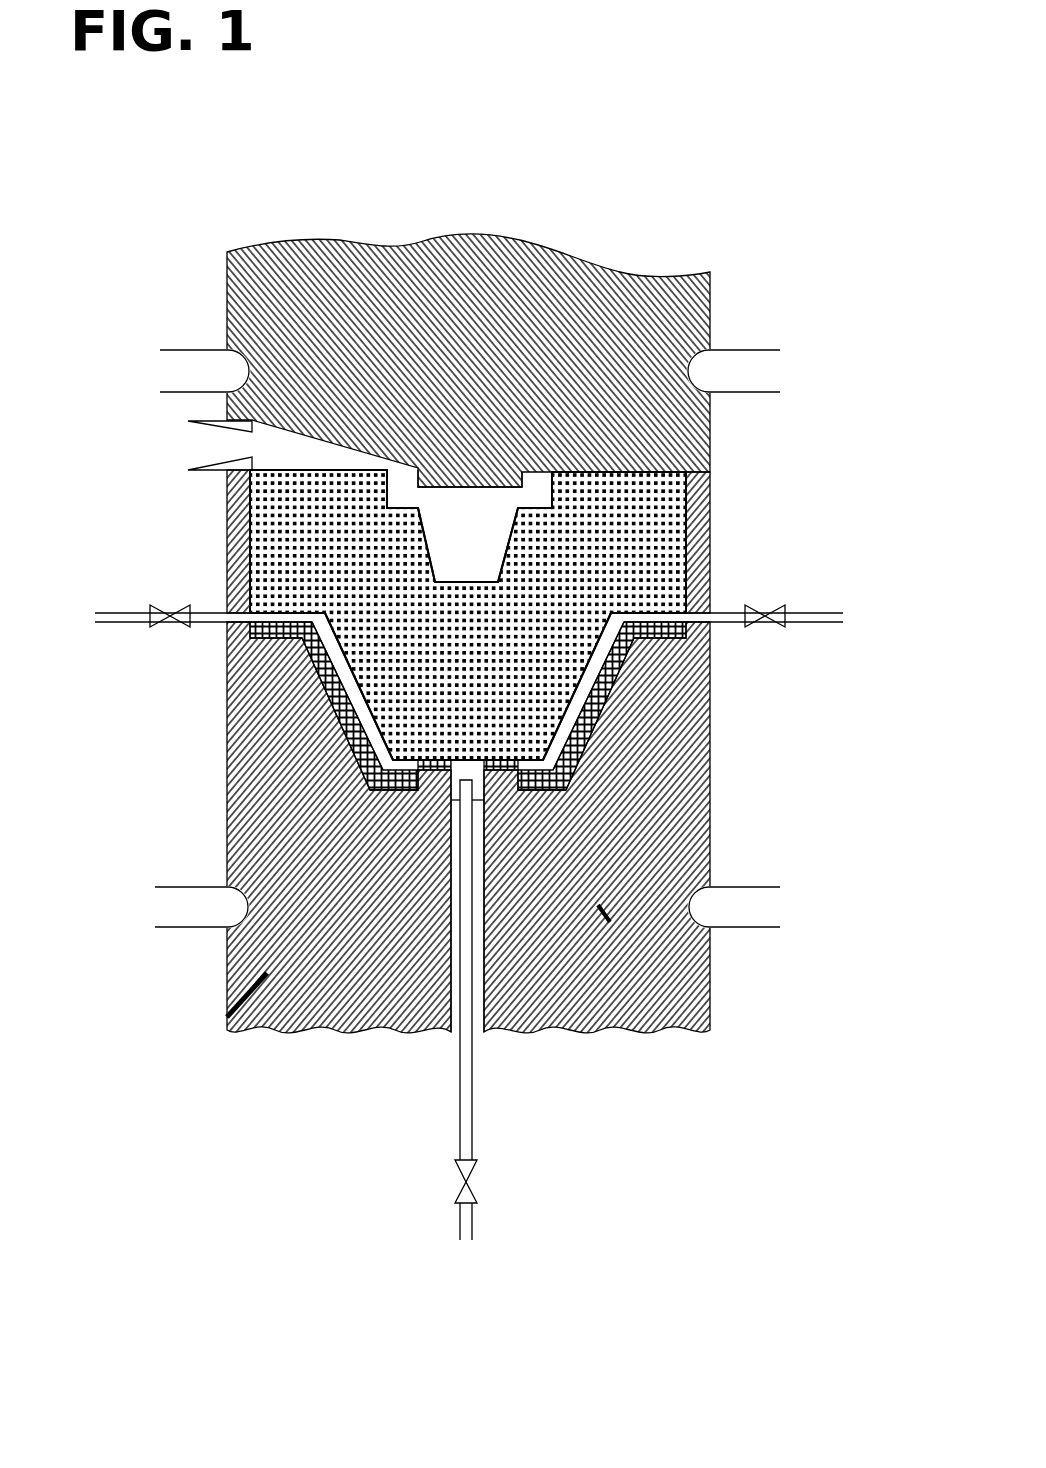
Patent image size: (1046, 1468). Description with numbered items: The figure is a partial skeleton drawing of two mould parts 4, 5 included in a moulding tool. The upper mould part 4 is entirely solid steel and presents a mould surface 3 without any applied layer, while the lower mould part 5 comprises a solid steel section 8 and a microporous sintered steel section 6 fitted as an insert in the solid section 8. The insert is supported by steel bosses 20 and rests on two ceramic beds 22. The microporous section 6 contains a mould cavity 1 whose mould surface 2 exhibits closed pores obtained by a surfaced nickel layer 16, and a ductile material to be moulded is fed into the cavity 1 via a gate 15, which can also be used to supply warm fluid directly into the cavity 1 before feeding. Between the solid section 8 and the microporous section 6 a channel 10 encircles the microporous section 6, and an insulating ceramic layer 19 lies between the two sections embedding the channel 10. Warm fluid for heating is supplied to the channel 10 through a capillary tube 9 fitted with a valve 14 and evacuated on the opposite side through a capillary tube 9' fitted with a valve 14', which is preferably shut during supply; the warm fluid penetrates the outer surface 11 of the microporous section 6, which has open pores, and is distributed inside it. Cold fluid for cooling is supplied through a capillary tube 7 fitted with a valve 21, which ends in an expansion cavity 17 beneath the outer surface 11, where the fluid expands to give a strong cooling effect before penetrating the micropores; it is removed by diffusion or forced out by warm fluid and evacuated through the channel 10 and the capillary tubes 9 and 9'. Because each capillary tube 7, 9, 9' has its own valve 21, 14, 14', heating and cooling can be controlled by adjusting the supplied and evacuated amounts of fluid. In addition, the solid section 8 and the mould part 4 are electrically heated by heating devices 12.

The mould cavity 1 is at (468, 518).
The mould surface 2 is at (690, 528).
The mould surface 3 is at (480, 483).
The mould part 4 is at (478, 365).
The mould part 5 is at (600, 855).
The microporous section 6 is at (365, 597).
The capillary tube 7 is at (463, 1218).
The solid section 8 is at (227, 1017).
The capillary tube 9 is at (748, 668).
The capillary tube 9' is at (189, 650).
The channel 10 is at (648, 638).
The outer surface 11 is at (332, 660).
The heating devices 12 is at (197, 378).
The valve 14 is at (820, 597).
The valve 14' is at (141, 646).
The gate 15 is at (218, 443).
The nickel layer 16 is at (387, 508).
The expansion cavity 17 is at (470, 768).
The insulating ceramic layer 19 is at (372, 802).
The steel bosses 20 is at (310, 645).
The valve 21 is at (463, 1172).
The ceramic beds 22 is at (425, 800).